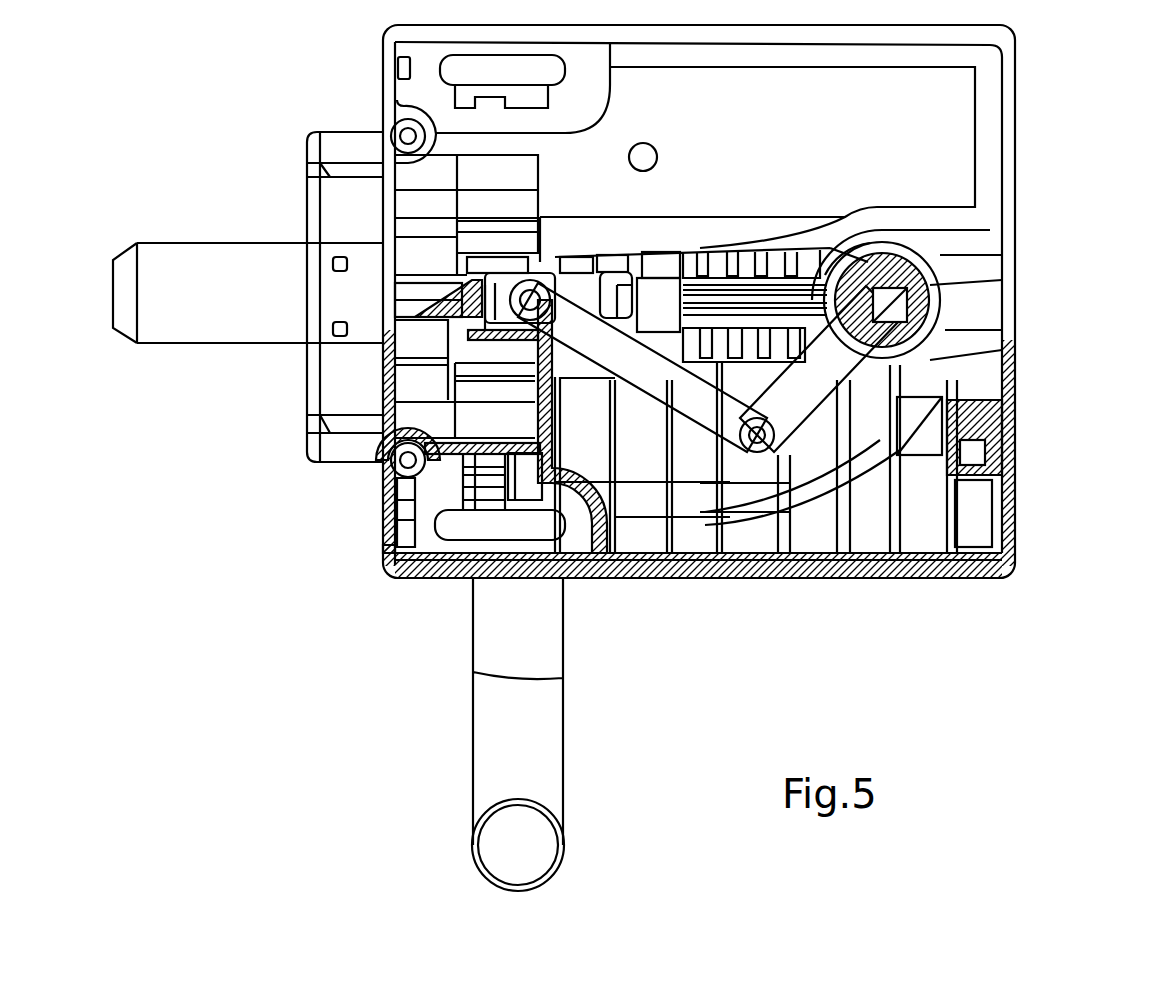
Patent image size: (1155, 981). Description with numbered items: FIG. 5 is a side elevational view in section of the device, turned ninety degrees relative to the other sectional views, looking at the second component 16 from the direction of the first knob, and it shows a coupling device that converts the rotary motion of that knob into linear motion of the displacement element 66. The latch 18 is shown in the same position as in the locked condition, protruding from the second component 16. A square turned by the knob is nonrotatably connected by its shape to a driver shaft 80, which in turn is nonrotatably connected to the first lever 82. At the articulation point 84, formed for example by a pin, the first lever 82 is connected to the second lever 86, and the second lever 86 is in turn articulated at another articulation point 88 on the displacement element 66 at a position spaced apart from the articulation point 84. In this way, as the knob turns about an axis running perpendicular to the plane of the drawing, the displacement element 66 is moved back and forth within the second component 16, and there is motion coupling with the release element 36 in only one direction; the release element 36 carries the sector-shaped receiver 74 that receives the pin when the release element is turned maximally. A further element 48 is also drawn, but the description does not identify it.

The second component 16 is at (1018, 103).
The latch 18 is at (203, 345).
The release element 36 is at (612, 298).
The pipe 48 is at (518, 632).
The displacement element 66 is at (518, 290).
The sector-shaped receiver 74 is at (900, 352).
The driver shaft 80 is at (890, 355).
The first lever 82 is at (812, 390).
The articulation point 84 is at (757, 452).
The second lever 86 is at (700, 400).
The another articulation point 88 is at (450, 292).